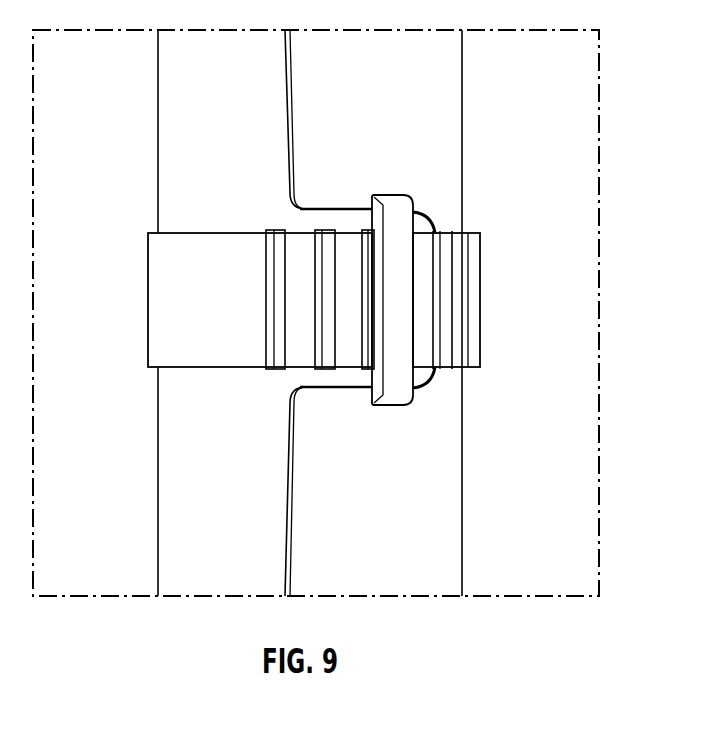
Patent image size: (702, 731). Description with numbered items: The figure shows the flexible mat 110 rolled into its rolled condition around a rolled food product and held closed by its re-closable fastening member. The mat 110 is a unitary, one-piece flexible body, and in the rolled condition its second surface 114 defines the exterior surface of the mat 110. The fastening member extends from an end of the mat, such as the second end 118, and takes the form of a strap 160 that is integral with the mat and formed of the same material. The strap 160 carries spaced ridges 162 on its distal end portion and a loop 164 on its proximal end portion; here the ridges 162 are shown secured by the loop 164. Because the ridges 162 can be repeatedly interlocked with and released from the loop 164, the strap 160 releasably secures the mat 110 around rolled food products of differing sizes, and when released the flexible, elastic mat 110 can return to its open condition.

The flexible mat 110 is at (462, 93).
The second surface 114 is at (447, 453).
The second end 118 is at (285, 543).
The strap 160 is at (222, 362).
The spaced ridges 162 is at (447, 310).
The loop 164 is at (397, 216).